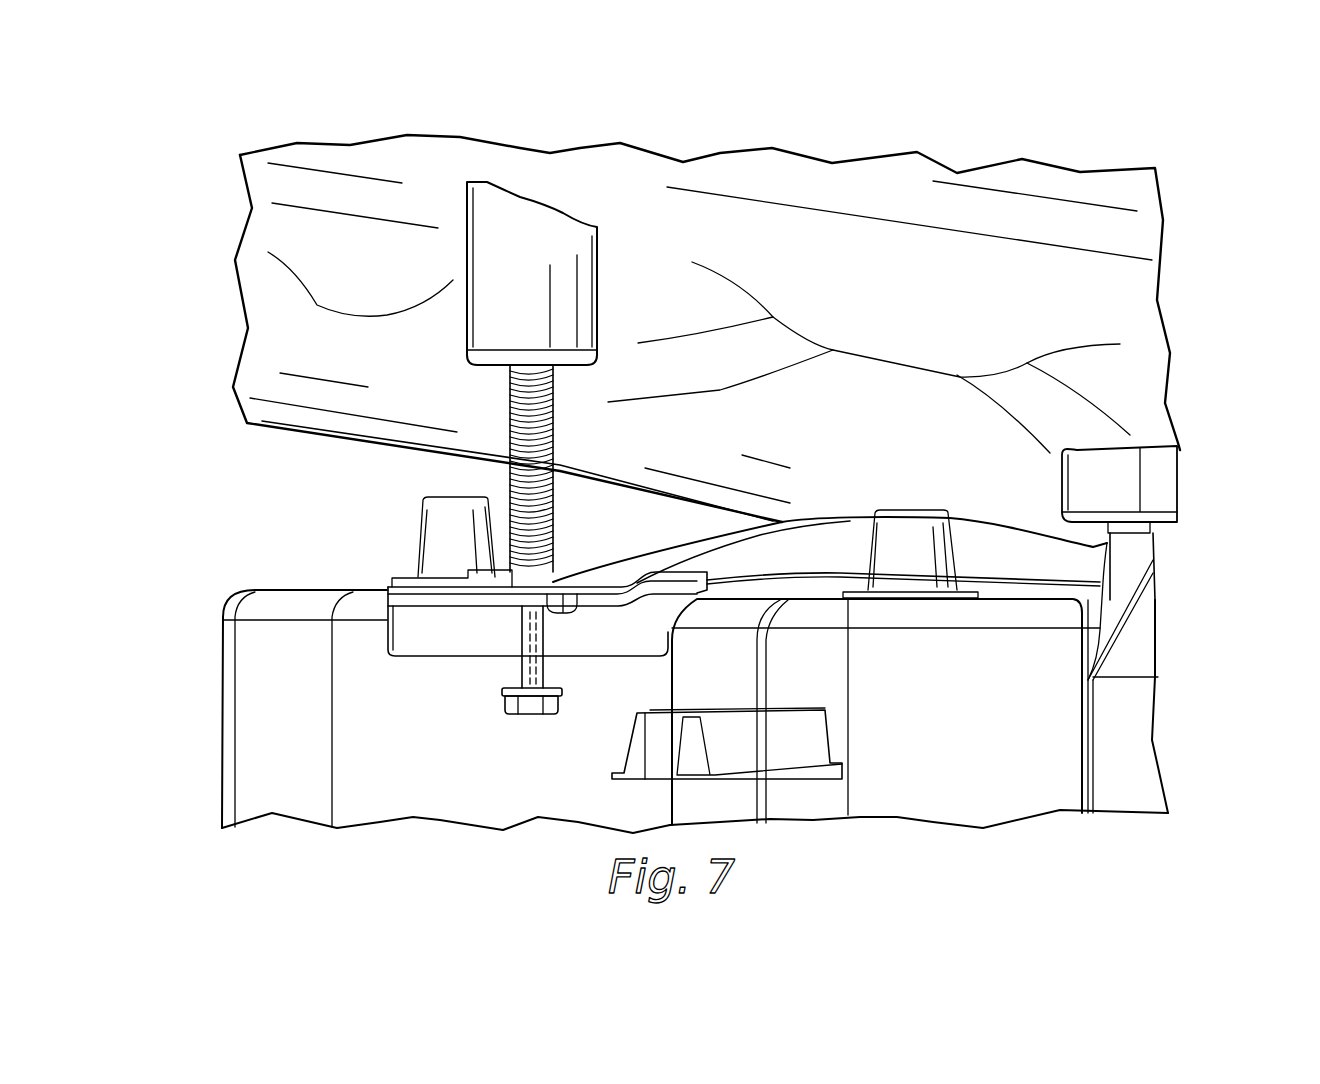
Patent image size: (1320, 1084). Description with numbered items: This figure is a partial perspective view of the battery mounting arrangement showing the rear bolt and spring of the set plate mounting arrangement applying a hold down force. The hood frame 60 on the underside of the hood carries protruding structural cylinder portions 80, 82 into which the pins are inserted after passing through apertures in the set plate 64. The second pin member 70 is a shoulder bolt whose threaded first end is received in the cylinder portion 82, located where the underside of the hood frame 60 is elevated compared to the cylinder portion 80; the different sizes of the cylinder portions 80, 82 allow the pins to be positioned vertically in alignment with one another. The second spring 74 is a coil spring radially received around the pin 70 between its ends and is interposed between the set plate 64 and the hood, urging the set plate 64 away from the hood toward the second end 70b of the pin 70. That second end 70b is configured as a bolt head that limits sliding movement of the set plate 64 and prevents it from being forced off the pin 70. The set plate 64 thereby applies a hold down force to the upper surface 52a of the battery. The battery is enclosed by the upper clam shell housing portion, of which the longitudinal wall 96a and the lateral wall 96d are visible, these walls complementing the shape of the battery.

The hood frame 60 is at (1007, 292).
The structural cylinder portion 82 is at (513, 283).
The second spring 74 is at (507, 480).
The second pin member 70 is at (528, 638).
The second end of second pin 70b is at (532, 712).
The set plate 64 is at (688, 557).
The upper surface of battery 52a is at (810, 596).
The structural cylinder portion 80 is at (1137, 480).
The longitudinal wall 96a is at (549, 801).
The lateral wall 96d is at (984, 746).